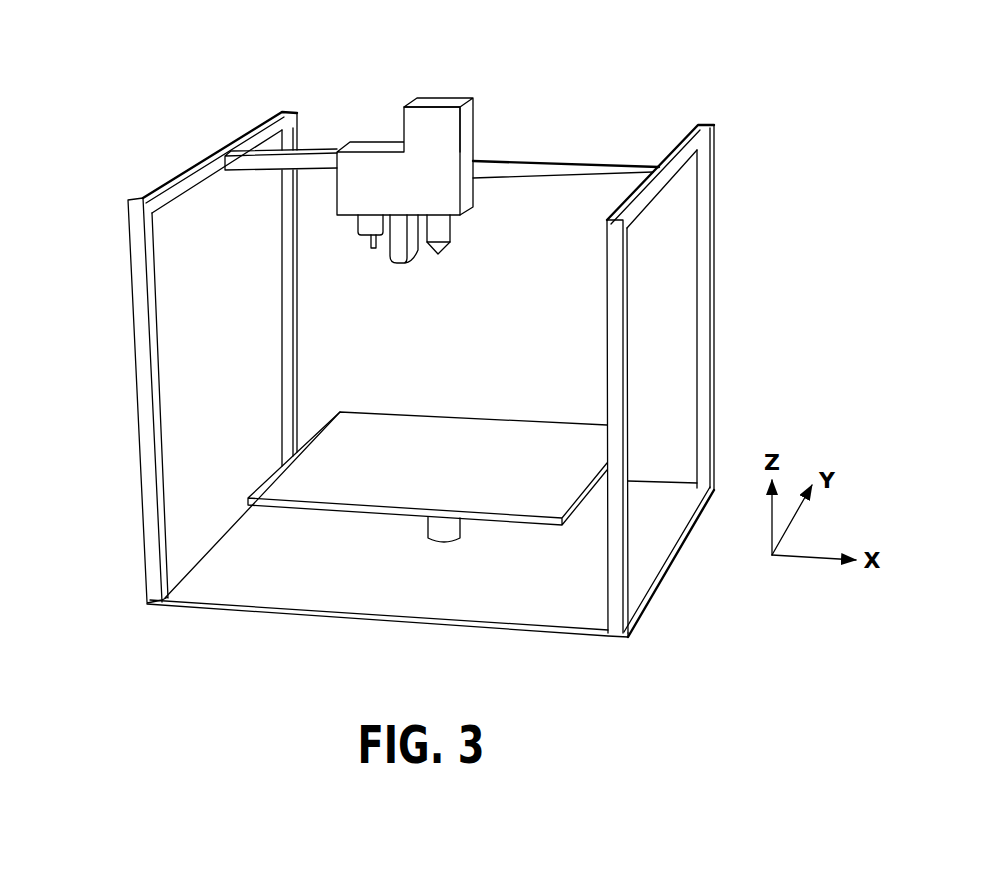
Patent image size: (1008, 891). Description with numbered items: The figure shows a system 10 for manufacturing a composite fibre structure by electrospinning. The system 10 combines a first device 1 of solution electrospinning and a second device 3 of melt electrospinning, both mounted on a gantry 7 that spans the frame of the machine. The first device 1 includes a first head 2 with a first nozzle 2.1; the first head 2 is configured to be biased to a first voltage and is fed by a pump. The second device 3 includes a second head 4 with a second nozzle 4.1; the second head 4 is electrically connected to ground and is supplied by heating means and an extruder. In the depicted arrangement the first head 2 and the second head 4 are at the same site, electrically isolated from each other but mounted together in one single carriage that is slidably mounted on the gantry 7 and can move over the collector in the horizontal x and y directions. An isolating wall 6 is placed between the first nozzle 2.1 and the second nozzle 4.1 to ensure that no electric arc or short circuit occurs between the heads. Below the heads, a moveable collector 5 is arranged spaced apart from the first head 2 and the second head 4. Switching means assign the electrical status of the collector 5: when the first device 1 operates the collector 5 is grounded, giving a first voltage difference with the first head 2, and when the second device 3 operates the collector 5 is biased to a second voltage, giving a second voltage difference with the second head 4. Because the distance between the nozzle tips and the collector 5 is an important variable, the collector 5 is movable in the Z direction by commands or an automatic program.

The system 10 is at (192, 128).
The first device 1 is at (358, 132).
The second device 3 is at (461, 93).
The gantry 7 is at (543, 174).
The first head 2 is at (352, 229).
The first nozzle 2.1 is at (367, 250).
The isolating wall 6 is at (398, 265).
The second head 4 is at (460, 229).
The second nozzle 4.1 is at (445, 253).
The collector 5 is at (347, 485).